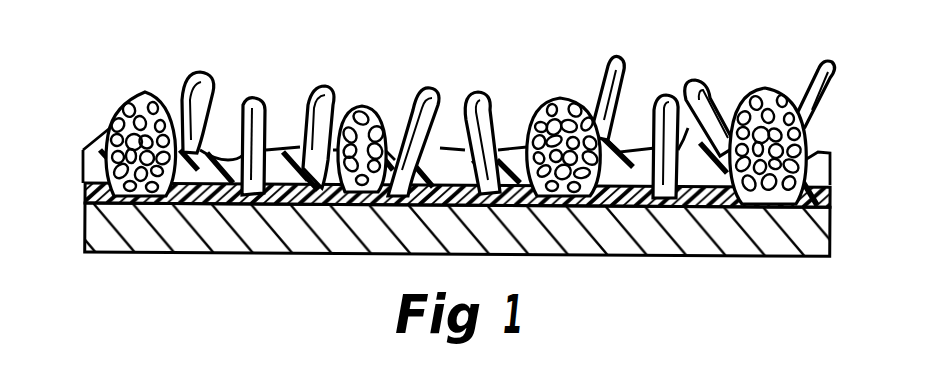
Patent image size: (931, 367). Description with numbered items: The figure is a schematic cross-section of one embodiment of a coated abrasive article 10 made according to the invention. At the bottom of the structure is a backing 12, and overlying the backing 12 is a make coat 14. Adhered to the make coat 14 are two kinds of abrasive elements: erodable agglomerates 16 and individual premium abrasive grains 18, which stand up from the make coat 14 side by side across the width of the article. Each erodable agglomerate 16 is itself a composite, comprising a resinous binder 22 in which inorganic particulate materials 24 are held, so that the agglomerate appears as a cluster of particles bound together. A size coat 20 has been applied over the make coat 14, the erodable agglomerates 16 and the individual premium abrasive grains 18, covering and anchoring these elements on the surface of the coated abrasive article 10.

The coated abrasive article 10 is at (497, 50).
The backing 12 is at (100, 228).
The make coat 14 is at (85, 198).
The erodable agglomerates 16 is at (163, 100).
The individual premium abrasive grains 18 is at (254, 100).
The size coat 20 is at (270, 157).
The resinous binder 22 is at (128, 106).
The inorganic particulate materials 24 is at (147, 97).